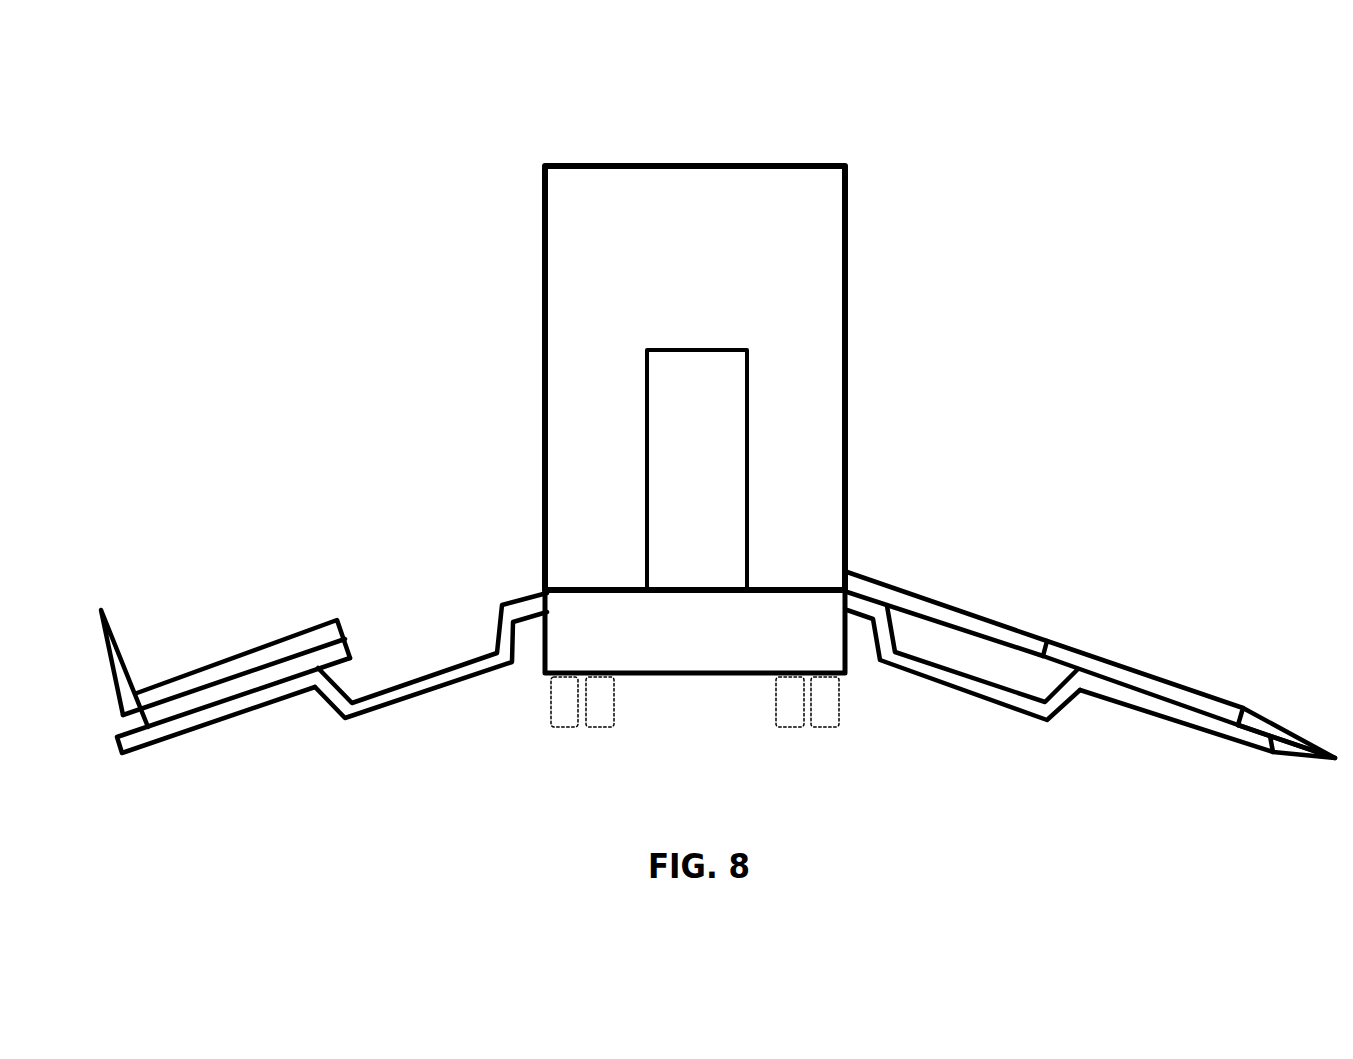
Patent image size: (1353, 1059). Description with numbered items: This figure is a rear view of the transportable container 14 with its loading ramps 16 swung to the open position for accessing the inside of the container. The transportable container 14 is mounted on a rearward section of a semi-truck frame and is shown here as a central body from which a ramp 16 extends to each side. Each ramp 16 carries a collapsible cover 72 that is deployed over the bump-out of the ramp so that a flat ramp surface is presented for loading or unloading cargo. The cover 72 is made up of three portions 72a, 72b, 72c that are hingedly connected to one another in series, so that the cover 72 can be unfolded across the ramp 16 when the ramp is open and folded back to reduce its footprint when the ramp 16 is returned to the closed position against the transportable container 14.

The transportable container 14 is at (699, 118).
The cover 72 is at (219, 613).
The first cover portion 72a is at (933, 601).
The second cover portion 72b is at (1102, 657).
The third cover portion 72c is at (1287, 731).
The loading ramp 16 is at (217, 725).